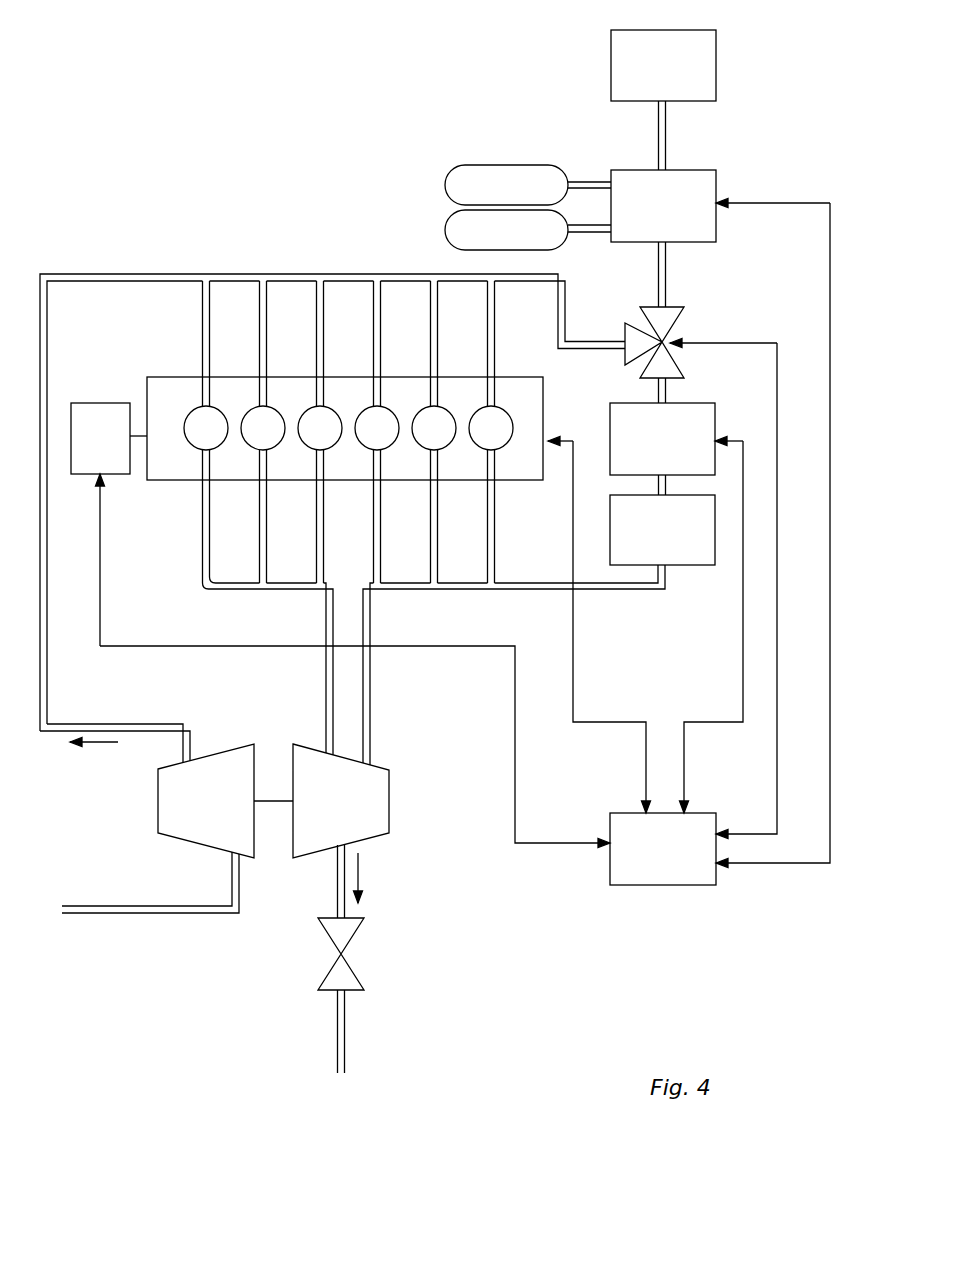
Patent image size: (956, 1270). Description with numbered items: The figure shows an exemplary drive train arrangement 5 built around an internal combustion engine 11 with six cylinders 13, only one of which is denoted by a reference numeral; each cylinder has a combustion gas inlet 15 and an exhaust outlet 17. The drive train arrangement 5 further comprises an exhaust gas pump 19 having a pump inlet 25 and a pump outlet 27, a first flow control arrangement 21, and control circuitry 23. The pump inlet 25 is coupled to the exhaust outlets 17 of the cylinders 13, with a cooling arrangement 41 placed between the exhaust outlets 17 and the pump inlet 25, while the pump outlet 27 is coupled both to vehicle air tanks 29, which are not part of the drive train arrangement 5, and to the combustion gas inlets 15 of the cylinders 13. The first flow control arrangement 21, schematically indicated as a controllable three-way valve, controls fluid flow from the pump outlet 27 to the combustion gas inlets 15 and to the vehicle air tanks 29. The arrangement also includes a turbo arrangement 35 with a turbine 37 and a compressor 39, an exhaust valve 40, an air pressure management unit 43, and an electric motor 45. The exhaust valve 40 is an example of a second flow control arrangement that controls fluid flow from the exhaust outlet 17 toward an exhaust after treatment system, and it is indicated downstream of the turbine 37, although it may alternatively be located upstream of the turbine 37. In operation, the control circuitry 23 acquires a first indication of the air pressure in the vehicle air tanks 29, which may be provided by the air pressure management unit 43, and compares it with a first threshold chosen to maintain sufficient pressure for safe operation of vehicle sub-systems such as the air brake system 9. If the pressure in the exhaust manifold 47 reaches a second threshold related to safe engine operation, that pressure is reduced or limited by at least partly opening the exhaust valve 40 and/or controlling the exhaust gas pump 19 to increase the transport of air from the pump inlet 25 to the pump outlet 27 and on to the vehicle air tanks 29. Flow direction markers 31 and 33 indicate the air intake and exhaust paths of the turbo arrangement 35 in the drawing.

The drive train arrangement 5 is at (348, 138).
The air brake system 9 is at (671, 78).
The internal combustion engine 11 is at (145, 252).
The cylinder 13 is at (320, 428).
The combustion gas inlet 15 is at (323, 405).
The exhaust outlet 17 is at (318, 452).
The exhaust gas pump 19 is at (676, 453).
The first flow control arrangement 21 is at (700, 308).
The control circuitry 23 is at (676, 863).
The pump inlet 25 is at (656, 484).
The pump outlet 27 is at (665, 393).
The vehicle air tanks 29 is at (520, 198).
The air intake line 31 is at (100, 744).
The exhaust outlet line 33 is at (362, 868).
The turbo arrangement 35 is at (265, 925).
The turbine 37 is at (405, 758).
The compressor 39 is at (160, 853).
The exhaust valve 40 is at (370, 952).
The cooling arrangement 41 is at (676, 543).
The air pressure management unit 43 is at (677, 220).
The electric motor 45 is at (113, 449).
The exhaust manifold 47 is at (405, 590).